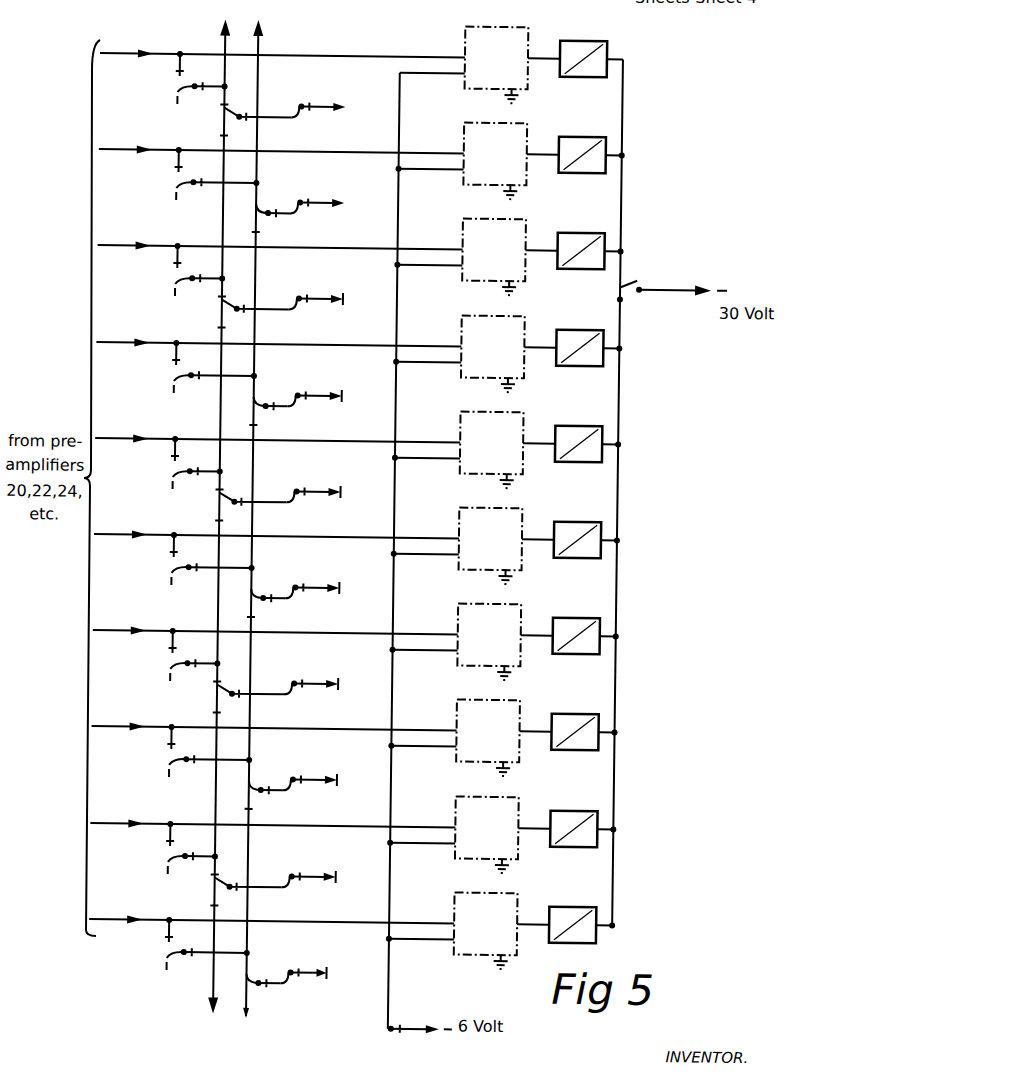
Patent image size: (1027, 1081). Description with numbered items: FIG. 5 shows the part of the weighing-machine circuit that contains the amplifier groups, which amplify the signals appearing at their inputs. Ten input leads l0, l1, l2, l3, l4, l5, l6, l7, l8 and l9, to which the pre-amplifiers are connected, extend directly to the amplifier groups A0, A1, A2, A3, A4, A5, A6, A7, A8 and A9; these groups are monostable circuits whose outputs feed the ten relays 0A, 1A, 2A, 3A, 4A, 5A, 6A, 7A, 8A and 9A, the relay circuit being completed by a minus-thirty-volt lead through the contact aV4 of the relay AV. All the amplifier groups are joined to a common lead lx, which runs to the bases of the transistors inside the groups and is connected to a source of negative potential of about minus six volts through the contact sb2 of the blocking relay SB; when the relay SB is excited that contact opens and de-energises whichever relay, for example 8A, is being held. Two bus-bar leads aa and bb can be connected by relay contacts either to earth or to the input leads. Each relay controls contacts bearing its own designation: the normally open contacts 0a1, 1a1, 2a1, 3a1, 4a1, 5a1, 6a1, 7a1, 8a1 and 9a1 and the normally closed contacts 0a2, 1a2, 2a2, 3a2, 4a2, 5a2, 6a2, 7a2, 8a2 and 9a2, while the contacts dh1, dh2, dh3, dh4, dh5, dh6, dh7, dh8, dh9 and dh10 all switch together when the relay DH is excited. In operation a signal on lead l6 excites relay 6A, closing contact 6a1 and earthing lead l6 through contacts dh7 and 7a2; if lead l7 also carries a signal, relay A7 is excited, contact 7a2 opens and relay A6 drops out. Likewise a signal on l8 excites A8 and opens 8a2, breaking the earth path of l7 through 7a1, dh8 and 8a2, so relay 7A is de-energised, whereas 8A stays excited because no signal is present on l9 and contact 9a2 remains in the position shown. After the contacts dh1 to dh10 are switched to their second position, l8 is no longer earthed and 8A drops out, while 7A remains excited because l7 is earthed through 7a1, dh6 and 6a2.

The input lead l0 is at (132, 49).
The input lead l1 is at (132, 145).
The input lead l2 is at (132, 241).
The input lead l3 is at (132, 338).
The input lead l4 is at (132, 434).
The input lead l5 is at (132, 530).
The input lead l6 is at (132, 626).
The input lead l7 is at (132, 722).
The input lead l8 is at (132, 819).
The input lead l9 is at (132, 915).
The normally open contact of relay 0A 0a1 is at (176, 86).
The normally open contact of relay 1A 1a1 is at (176, 182).
The normally open contact of relay 2A 2a1 is at (176, 278).
The normally open contact of relay 3A 3a1 is at (176, 375).
The normally open contact of relay 4A 4a1 is at (176, 471).
The normally open contact of relay 5A 5a1 is at (176, 567).
The normally open contact of relay 6A 6a1 is at (176, 663).
The normally open contact of relay 7A 7a1 is at (176, 759).
The normally open contact of relay 8A 8a1 is at (176, 856).
The normally open contact of relay 9A 9a1 is at (176, 952).
The contact of relay DH dh1 is at (232, 113).
The contact of relay DH dh2 is at (259, 213).
The contact of relay DH dh3 is at (232, 305).
The contact of relay DH dh4 is at (259, 406).
The contact of relay DH dh5 is at (232, 498).
The contact of relay DH dh6 is at (259, 598).
The contact of relay DH dh7 is at (232, 690).
The contact of relay DH dh8 is at (259, 790).
The contact of relay DH dh9 is at (232, 883).
The contact of relay DH dh10 is at (261, 983).
The normally closed contact of relay 1A 1a2 is at (299, 109).
The normally closed contact of relay 2A 2a2 is at (299, 205).
The normally closed contact of relay 3A 3a2 is at (299, 301).
The normally closed contact of relay 4A 4a2 is at (299, 398).
The normally closed contact of relay 5A 5a2 is at (299, 494).
The normally closed contact of relay 6A 6a2 is at (299, 590).
The normally closed contact of relay 7A 7a2 is at (299, 686).
The normally closed contact of relay 8A 8a2 is at (299, 782).
The normally closed contact of relay 9A 9a2 is at (299, 879).
The normally closed contact of relay 0A 0a2 is at (310, 978).
The bus bar lead aa is at (232, 34).
The bus bar lead bb is at (268, 34).
The common lead lx is at (400, 514).
The contact of relay SB sb2 is at (397, 1030).
The contact of relay AV aV4 is at (634, 272).
The amplifier group A0 is at (463, 65).
The amplifier group A1 is at (461, 161).
The amplifier group A2 is at (460, 257).
The amplifier group A3 is at (459, 354).
The amplifier group A4 is at (458, 450).
The amplifier group A5 is at (456, 546).
The amplifier group A6 is at (455, 642).
The amplifier group A7 is at (454, 738).
The amplifier group A8 is at (453, 835).
The amplifier group A9 is at (452, 931).
The relay 0A is at (575, 58).
The relay 1A is at (576, 154).
The relay 2A is at (574, 250).
The relay 3A is at (573, 347).
The relay 4A is at (572, 443).
The relay 5A is at (571, 539).
The relay 6A is at (570, 635).
The relay 7A is at (568, 731).
The relay 8A is at (567, 828).
The relay 9A is at (566, 924).